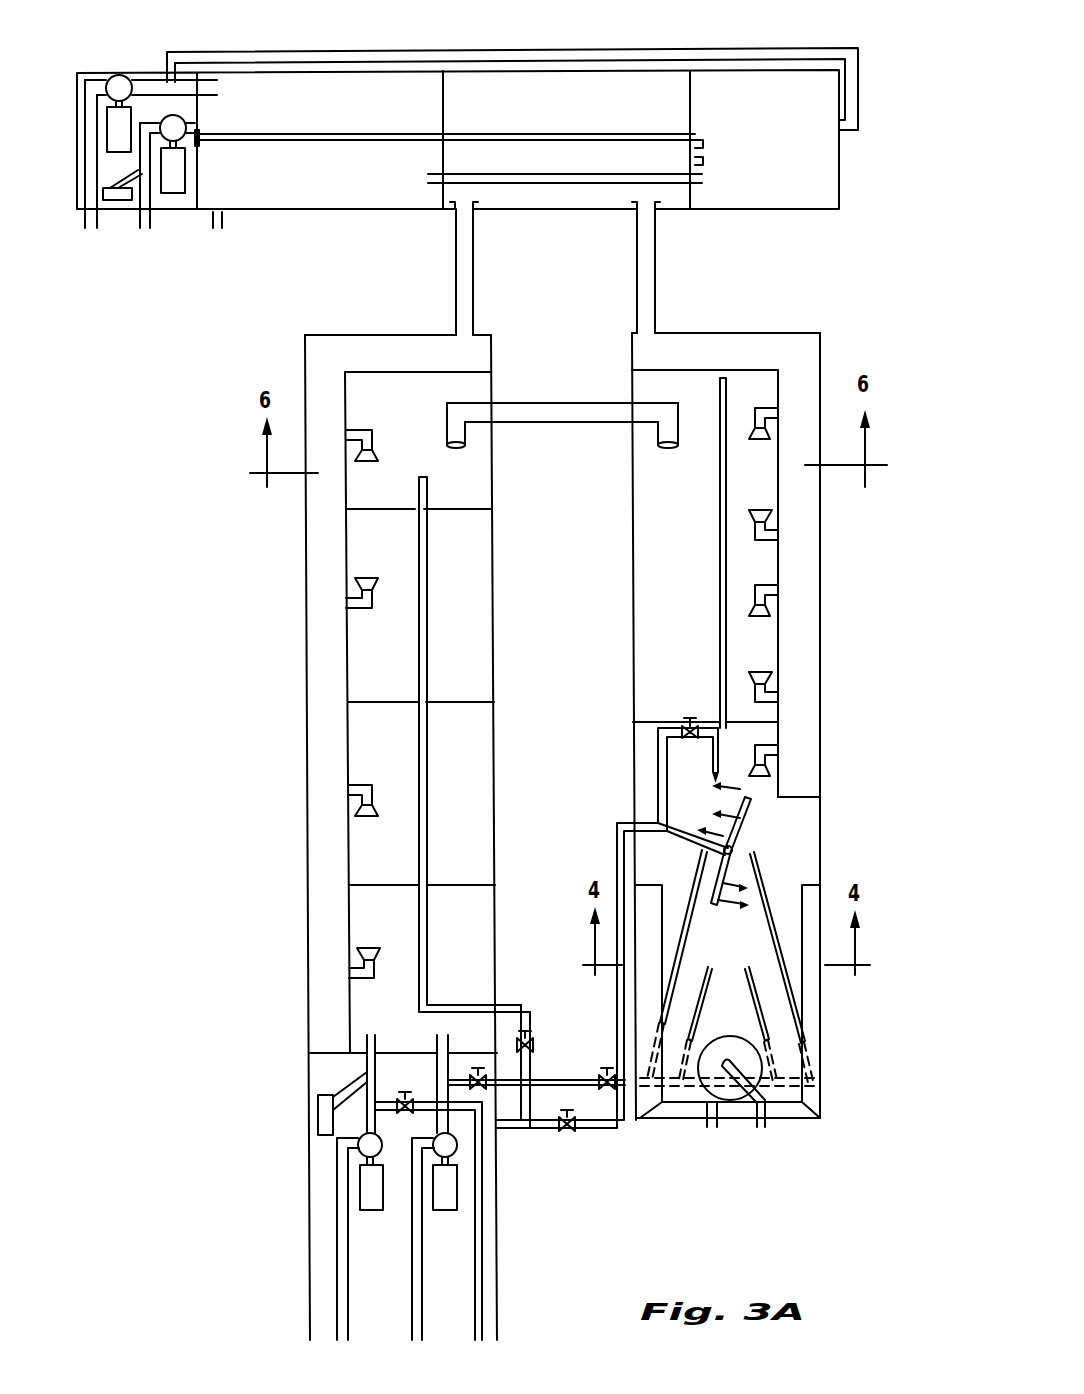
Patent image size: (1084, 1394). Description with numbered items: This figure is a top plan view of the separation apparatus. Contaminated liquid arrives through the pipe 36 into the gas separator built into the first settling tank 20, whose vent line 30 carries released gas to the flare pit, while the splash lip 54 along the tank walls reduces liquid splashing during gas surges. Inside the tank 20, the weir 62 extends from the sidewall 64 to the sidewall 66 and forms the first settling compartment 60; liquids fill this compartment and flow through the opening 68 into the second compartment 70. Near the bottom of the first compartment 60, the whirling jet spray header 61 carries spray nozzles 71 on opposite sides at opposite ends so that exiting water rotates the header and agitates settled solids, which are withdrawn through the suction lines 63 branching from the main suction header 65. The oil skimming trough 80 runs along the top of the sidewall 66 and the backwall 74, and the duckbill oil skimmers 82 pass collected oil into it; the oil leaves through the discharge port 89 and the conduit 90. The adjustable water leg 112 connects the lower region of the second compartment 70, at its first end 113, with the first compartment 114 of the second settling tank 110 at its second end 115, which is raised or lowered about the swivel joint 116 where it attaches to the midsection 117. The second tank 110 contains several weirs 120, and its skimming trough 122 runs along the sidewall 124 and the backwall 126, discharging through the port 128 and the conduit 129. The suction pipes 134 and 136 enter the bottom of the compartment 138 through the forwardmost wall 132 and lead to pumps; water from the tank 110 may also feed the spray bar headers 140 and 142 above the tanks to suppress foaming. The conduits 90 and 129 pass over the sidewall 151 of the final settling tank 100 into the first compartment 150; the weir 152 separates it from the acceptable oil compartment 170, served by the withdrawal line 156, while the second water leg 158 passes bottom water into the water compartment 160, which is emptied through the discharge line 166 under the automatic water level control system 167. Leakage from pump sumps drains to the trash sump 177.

The first settling tank 20 is at (838, 645).
The vent line 30 is at (768, 1118).
The pipe 36 is at (713, 1127).
The splash lip 54 is at (810, 1000).
The first settling compartment 60 is at (658, 853).
The whirling jet spray header 61 is at (746, 832).
The weir 62 is at (640, 722).
The suction lines 63 is at (776, 895).
The sidewall 64 is at (630, 797).
The main suction header 65 is at (668, 1092).
The sidewall 66 is at (826, 852).
The opening 68 is at (660, 722).
The second compartment 70 is at (726, 583).
The spray nozzles 71 is at (725, 797).
The backwall 74 is at (752, 333).
The oil skimming trough 80 is at (811, 765).
The duckbill oil skimmers 82 is at (757, 680).
The discharge port 89 is at (656, 330).
The conduit 90 is at (633, 294).
The final settling tank 100 is at (840, 160).
The second settling tank 110 is at (497, 585).
The adjustable water leg 112 is at (613, 424).
The first end 113 is at (671, 450).
The first compartment 114 is at (418, 675).
The second end 115 is at (452, 450).
The swivel joint 116 is at (470, 400).
The midsection 117 is at (521, 403).
The weirs 120 is at (440, 513).
The skimming trough 122 is at (325, 615).
The sidewall 124 is at (305, 543).
The backwall 126 is at (383, 338).
The discharge port 128 is at (463, 343).
The conduit 129 is at (472, 302).
The forwardmost wall 132 is at (393, 1040).
The suction pipe 134 is at (362, 1073).
The suction pipe 136 is at (420, 1040).
The compartment 138 is at (473, 972).
The spray bar header 140 is at (720, 605).
The spray bar header 142 is at (412, 683).
The first compartment 150 is at (583, 210).
The sidewall 151 is at (432, 213).
The weir 152 is at (441, 156).
The acceptable oil withdrawal line 156 is at (198, 80).
The second water leg 158 is at (619, 178).
The water compartment 160 is at (779, 120).
The discharge line 166 is at (607, 52).
The automatic water level control system 167 is at (560, 133).
The acceptable oil compartment 170 is at (389, 93).
The trash sump 177 is at (115, 200).